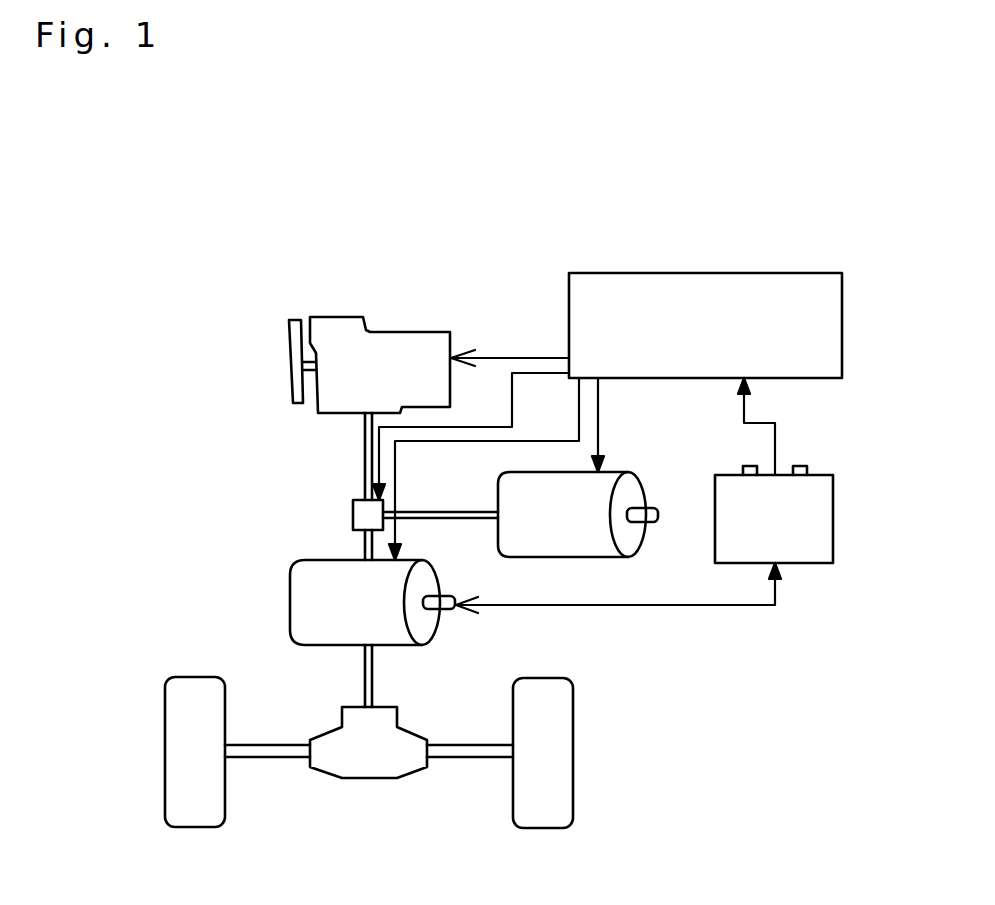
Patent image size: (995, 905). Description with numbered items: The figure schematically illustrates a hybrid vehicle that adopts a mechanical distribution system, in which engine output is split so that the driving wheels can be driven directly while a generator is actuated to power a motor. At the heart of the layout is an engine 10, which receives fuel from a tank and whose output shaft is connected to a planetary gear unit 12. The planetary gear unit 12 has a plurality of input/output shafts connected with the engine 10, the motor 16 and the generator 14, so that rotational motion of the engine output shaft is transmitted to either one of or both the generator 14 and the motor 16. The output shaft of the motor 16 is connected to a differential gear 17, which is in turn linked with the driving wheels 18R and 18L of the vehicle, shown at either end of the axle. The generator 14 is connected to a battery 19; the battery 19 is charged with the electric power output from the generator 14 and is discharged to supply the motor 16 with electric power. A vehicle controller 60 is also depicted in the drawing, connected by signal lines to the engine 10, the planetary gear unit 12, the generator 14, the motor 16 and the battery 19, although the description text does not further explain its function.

The engine 10 is at (390, 332).
The planetary gear unit 12 is at (353, 518).
The generator 14 is at (613, 470).
The motor 16 is at (290, 594).
The differential gear 17 is at (367, 778).
The driving wheel 18L is at (163, 745).
The driving wheel 18R is at (573, 748).
The battery 19 is at (833, 493).
The vehicle controller 60 is at (750, 273).